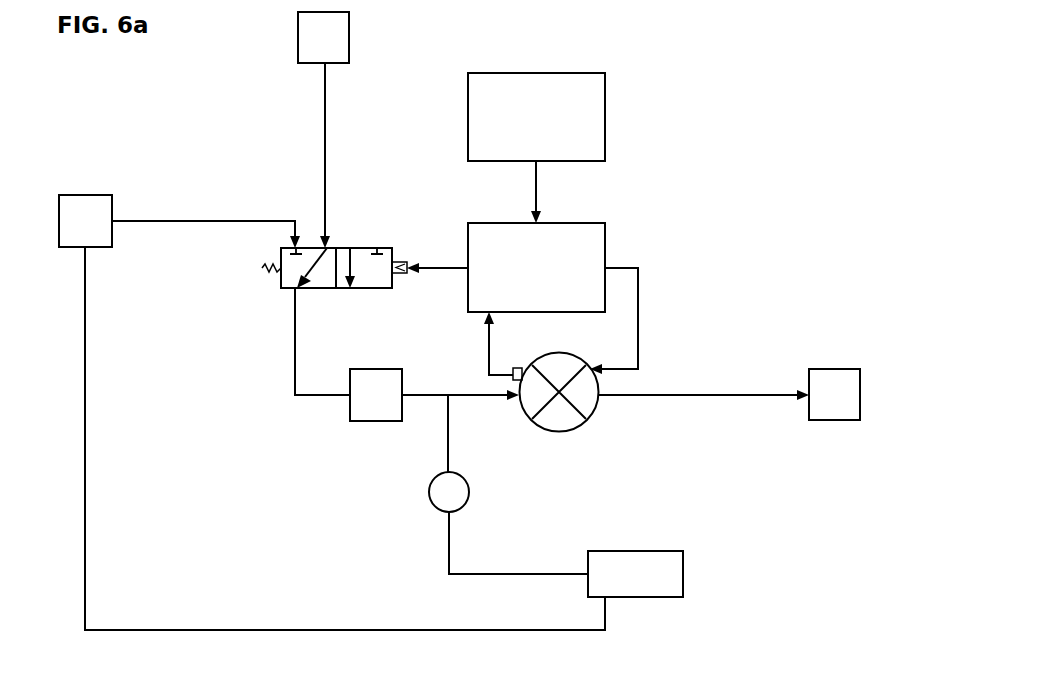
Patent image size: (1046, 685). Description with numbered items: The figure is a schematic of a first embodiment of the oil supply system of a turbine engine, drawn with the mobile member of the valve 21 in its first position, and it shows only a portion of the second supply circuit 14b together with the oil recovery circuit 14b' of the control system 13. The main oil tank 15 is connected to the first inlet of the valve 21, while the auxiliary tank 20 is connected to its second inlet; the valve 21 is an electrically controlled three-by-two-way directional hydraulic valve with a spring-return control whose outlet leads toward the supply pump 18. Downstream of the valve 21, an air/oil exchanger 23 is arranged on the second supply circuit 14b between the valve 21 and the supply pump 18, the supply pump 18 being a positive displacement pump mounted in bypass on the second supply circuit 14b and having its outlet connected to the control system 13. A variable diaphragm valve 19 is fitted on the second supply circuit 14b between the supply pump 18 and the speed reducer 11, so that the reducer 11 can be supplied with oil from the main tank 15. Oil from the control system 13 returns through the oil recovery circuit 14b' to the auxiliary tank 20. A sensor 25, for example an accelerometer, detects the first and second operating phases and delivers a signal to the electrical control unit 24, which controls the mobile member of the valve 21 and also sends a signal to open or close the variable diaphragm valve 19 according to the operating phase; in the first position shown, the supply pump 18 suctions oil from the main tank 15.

The speed reducer 11 is at (850, 392).
The control system 13 is at (648, 598).
The second supply circuit 14b is at (703, 365).
The oil recovery circuit 14b' is at (345, 438).
The main oil tank 15 is at (337, 35).
The supply pump 18 is at (438, 512).
The variable diaphragm valve 19 is at (558, 432).
The auxiliary tank 20 is at (72, 228).
The valve 21 is at (363, 253).
The air/oil exchanger 23 is at (375, 425).
The electrical control unit 24 is at (595, 244).
The sensor 25 is at (595, 132).